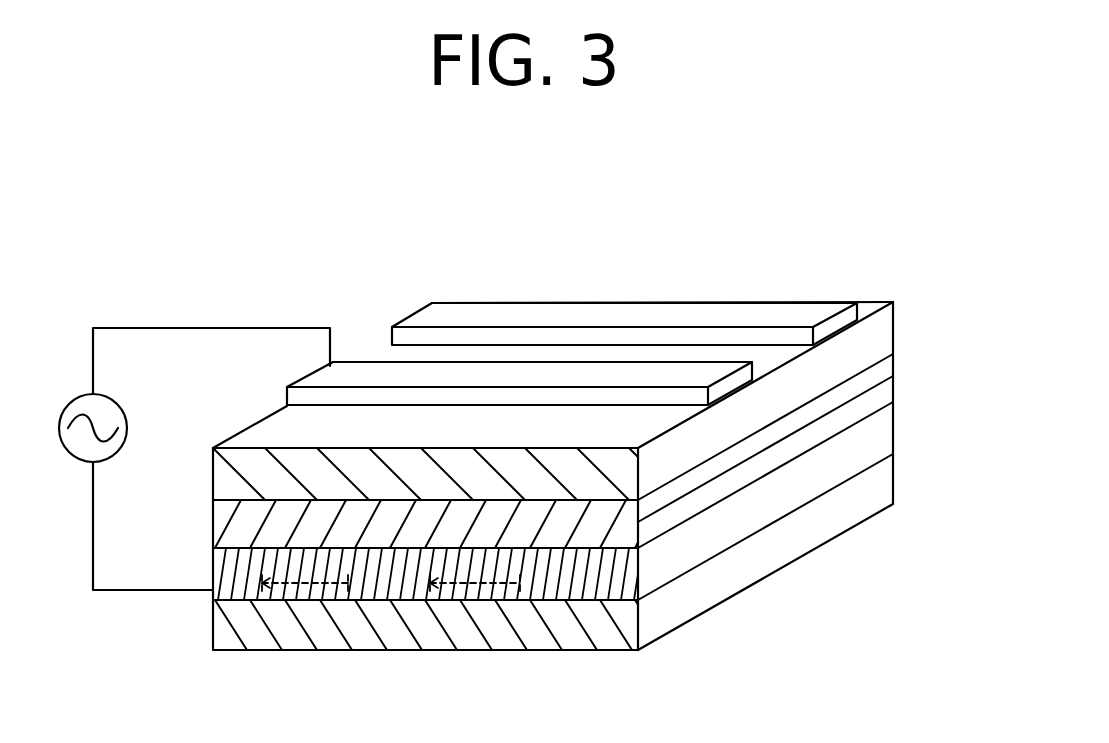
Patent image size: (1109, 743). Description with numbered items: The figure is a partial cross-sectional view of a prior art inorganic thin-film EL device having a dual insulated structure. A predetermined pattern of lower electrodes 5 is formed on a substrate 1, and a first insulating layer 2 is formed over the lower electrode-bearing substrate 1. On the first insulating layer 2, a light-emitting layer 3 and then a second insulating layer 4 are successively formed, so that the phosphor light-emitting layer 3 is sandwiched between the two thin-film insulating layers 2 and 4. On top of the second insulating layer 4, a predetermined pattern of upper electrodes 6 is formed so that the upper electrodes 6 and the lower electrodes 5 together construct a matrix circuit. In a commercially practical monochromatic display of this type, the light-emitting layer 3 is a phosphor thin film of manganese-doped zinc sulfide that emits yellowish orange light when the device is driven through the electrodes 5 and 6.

The substrate 1 is at (638, 650).
The first insulating layer 2 is at (638, 593).
The light-emitting layer 3 is at (212, 534).
The second insulating layer 4 is at (212, 474).
The lower electrodes 5 is at (288, 590).
The upper electrodes 6 is at (287, 381).